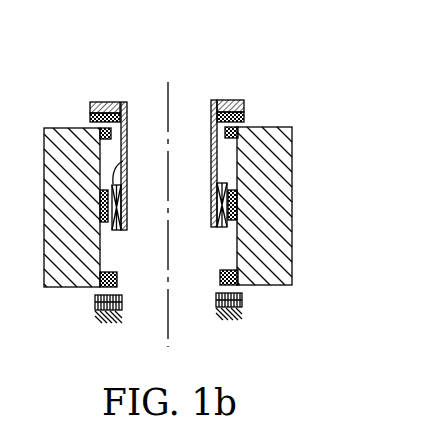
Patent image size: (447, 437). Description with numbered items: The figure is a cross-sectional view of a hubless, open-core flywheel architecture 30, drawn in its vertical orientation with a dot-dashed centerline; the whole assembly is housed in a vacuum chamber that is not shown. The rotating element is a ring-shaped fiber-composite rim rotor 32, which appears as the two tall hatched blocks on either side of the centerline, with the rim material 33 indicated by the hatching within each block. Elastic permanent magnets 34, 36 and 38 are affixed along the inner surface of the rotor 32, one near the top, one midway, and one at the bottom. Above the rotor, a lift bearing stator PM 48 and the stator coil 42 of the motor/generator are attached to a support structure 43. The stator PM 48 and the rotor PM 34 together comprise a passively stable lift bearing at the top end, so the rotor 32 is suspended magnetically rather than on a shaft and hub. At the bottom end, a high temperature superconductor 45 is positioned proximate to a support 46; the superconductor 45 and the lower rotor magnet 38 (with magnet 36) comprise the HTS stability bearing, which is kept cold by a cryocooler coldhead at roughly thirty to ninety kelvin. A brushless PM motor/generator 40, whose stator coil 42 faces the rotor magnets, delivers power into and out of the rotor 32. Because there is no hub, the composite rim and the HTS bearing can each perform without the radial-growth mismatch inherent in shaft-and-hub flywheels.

The flywheel architecture 30 is at (327, 98).
The fiber-composite rim rotor 32 is at (276, 203).
The magnet pole piece 33 is at (100, 178).
The elastic permanent magnet 34 is at (100, 135).
The elastic permanent magnet 36 is at (100, 196).
The elastic permanent magnet 38 is at (100, 279).
The brushless PM motor/generator 40 is at (211, 153).
The stator coil 42 is at (123, 161).
The support structure 43 is at (101, 102).
The high temperature superconductor 45 is at (243, 298).
The support 46 is at (230, 322).
The lift bearing stator PM 48 is at (90, 117).